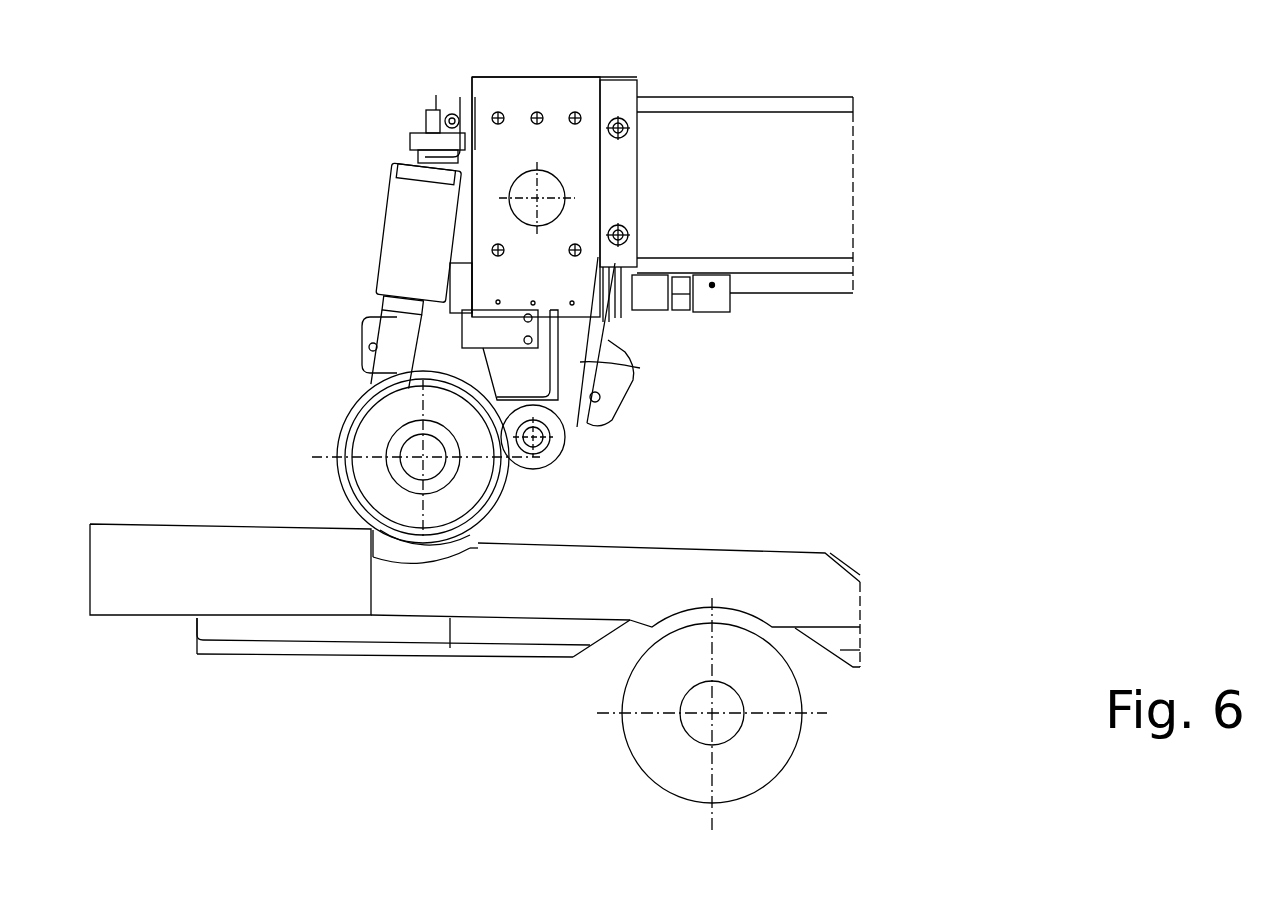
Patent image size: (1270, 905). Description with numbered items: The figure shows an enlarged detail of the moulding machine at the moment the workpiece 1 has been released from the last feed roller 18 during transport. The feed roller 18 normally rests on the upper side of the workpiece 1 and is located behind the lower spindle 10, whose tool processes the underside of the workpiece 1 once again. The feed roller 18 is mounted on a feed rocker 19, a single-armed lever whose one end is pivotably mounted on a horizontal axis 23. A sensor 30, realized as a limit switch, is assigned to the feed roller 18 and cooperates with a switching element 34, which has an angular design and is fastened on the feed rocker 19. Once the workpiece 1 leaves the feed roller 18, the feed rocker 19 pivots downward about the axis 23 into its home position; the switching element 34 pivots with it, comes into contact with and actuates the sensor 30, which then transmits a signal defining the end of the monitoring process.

The workpiece 1 is at (128, 562).
The lower spindle 10 is at (753, 768).
The feed roller 18 is at (380, 423).
The feed rocker 19 is at (517, 477).
The horizontal axis 23 is at (560, 433).
The sensor 30 is at (499, 337).
The switching element 34 is at (563, 362).